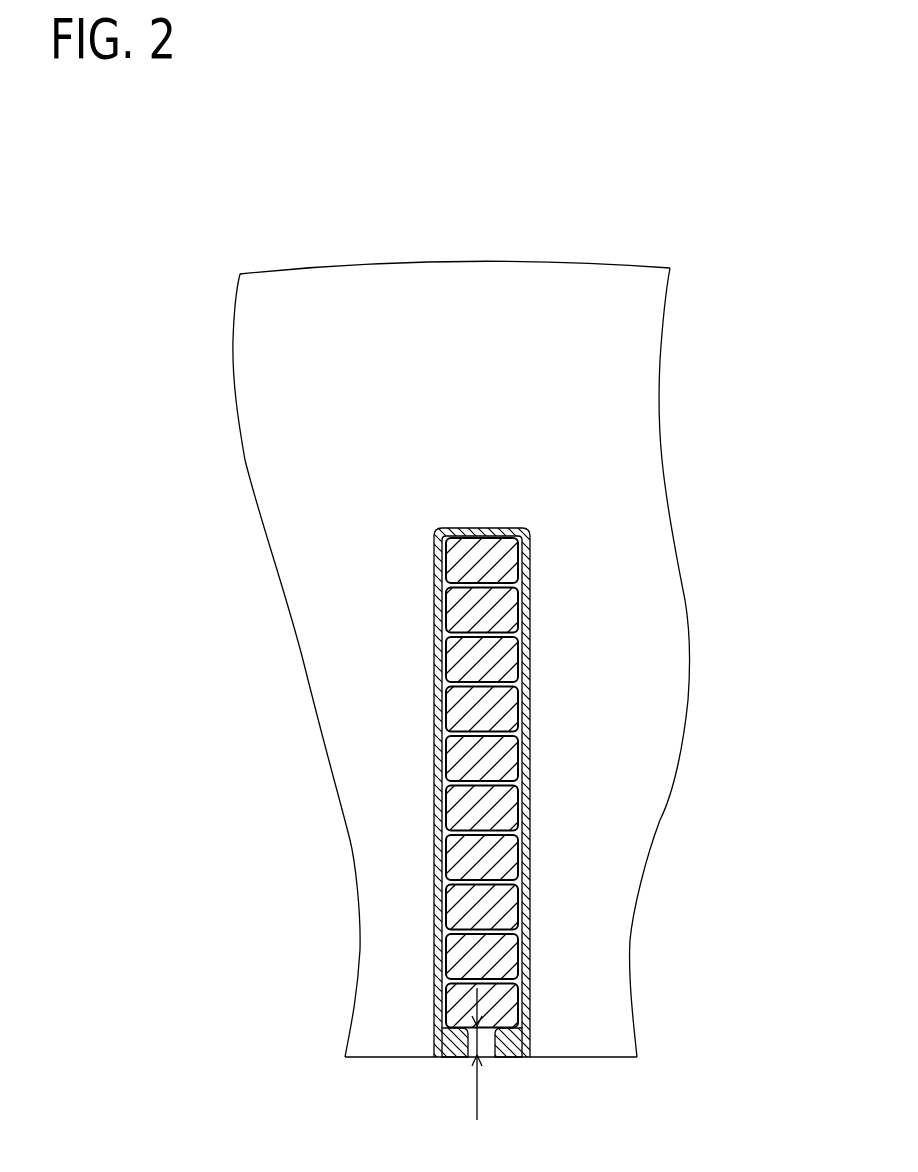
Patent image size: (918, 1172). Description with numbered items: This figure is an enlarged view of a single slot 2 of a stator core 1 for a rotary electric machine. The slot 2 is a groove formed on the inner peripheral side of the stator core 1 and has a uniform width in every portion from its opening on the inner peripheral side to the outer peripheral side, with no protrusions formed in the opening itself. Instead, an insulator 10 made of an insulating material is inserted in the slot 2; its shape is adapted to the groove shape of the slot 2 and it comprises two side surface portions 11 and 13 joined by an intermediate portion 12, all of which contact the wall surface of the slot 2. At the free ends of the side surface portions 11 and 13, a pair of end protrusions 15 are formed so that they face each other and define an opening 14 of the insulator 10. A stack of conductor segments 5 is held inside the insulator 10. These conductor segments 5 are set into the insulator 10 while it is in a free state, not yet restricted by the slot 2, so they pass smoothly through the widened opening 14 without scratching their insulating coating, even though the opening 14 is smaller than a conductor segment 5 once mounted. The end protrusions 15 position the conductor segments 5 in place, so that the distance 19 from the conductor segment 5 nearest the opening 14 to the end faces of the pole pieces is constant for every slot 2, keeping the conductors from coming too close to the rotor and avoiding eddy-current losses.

The stator core 1 is at (578, 270).
The slot 2 is at (496, 772).
The conductor segment 5 is at (498, 710).
The insulator 10 is at (433, 866).
The side surface portion 11 is at (438, 666).
The intermediate portion 12 is at (490, 527).
The side surface portion 13 is at (524, 652).
The opening 14 is at (488, 1042).
The end protrusion 15 is at (455, 1046).
The distance 19 is at (480, 1043).